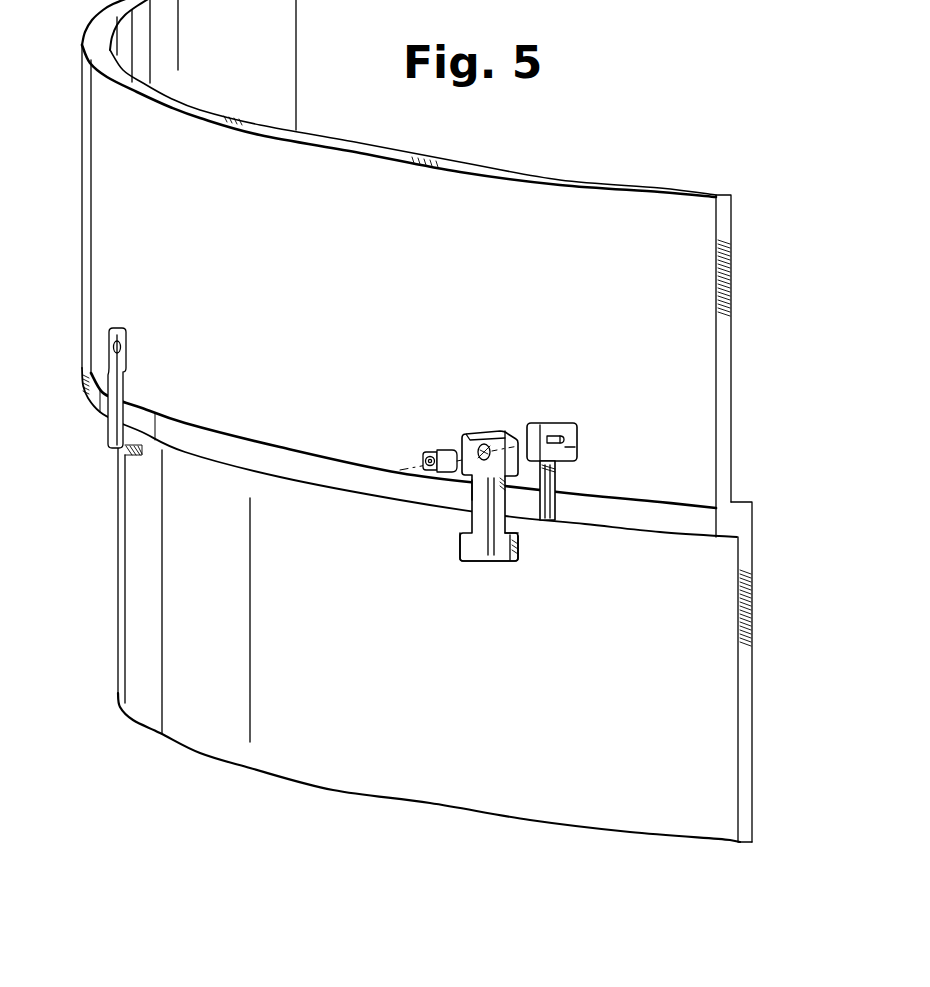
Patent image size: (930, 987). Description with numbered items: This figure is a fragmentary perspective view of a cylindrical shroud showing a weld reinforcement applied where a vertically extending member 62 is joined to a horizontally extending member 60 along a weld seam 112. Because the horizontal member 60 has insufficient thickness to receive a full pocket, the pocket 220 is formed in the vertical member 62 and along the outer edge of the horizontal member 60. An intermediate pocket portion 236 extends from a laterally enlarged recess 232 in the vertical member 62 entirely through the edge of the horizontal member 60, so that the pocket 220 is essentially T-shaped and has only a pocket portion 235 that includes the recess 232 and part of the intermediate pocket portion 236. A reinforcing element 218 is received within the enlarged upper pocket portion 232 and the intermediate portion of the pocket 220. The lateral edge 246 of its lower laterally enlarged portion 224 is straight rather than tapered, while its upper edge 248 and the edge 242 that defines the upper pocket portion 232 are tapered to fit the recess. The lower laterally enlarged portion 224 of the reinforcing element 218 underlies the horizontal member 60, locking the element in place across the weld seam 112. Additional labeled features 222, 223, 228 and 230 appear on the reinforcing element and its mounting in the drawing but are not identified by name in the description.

The horizontally extending member 60 is at (741, 523).
The vertically extending member 62 is at (686, 381).
The weld seam 112 is at (660, 508).
The reinforcing element 218 is at (462, 518).
The pocket 220 is at (575, 461).
The pin 222 is at (557, 435).
The screw 223 is at (425, 453).
The lower laterally enlarged portion 224 is at (475, 552).
The stem 228 is at (472, 519).
The aperture 230 is at (478, 447).
The laterally enlarged recess 232 is at (577, 442).
The pocket portion 235 is at (578, 450).
The intermediate pocket portion 236 is at (557, 522).
The edge defining the upper pocket portion 242 is at (518, 433).
The lateral edge 246 is at (516, 527).
The upper edge 248 is at (472, 491).